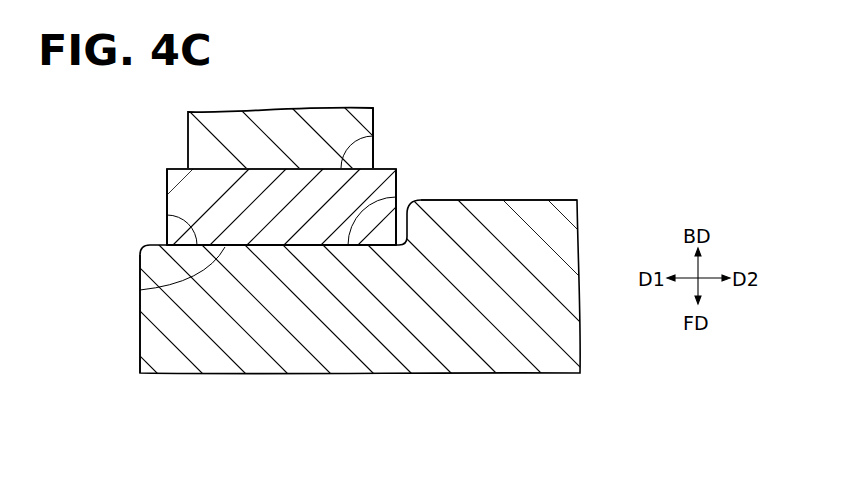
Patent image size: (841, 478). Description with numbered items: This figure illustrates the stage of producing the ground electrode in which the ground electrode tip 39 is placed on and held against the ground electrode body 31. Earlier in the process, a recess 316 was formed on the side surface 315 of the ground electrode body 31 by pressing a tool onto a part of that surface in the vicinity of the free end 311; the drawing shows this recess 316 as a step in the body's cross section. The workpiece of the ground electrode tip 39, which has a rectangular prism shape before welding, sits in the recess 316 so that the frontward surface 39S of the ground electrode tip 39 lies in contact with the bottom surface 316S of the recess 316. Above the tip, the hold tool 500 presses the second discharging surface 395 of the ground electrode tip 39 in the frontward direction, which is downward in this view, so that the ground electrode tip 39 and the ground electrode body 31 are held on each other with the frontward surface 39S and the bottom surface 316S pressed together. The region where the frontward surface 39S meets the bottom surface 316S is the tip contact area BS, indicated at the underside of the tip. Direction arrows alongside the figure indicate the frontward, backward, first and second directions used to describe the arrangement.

The hold tool 500 is at (280, 110).
The second discharging surface 395 is at (373, 135).
The ground electrode tip 39 is at (167, 186).
The bottom surface of the recess 316S is at (167, 215).
The recess 316 is at (397, 200).
The side surface of the ground electrode body 315 is at (477, 200).
The ground electrode body 31 is at (507, 200).
The frontward surface of the ground electrode tip 39S is at (140, 291).
The free end 311 is at (140, 312).
The tip contact area BS is at (260, 245).